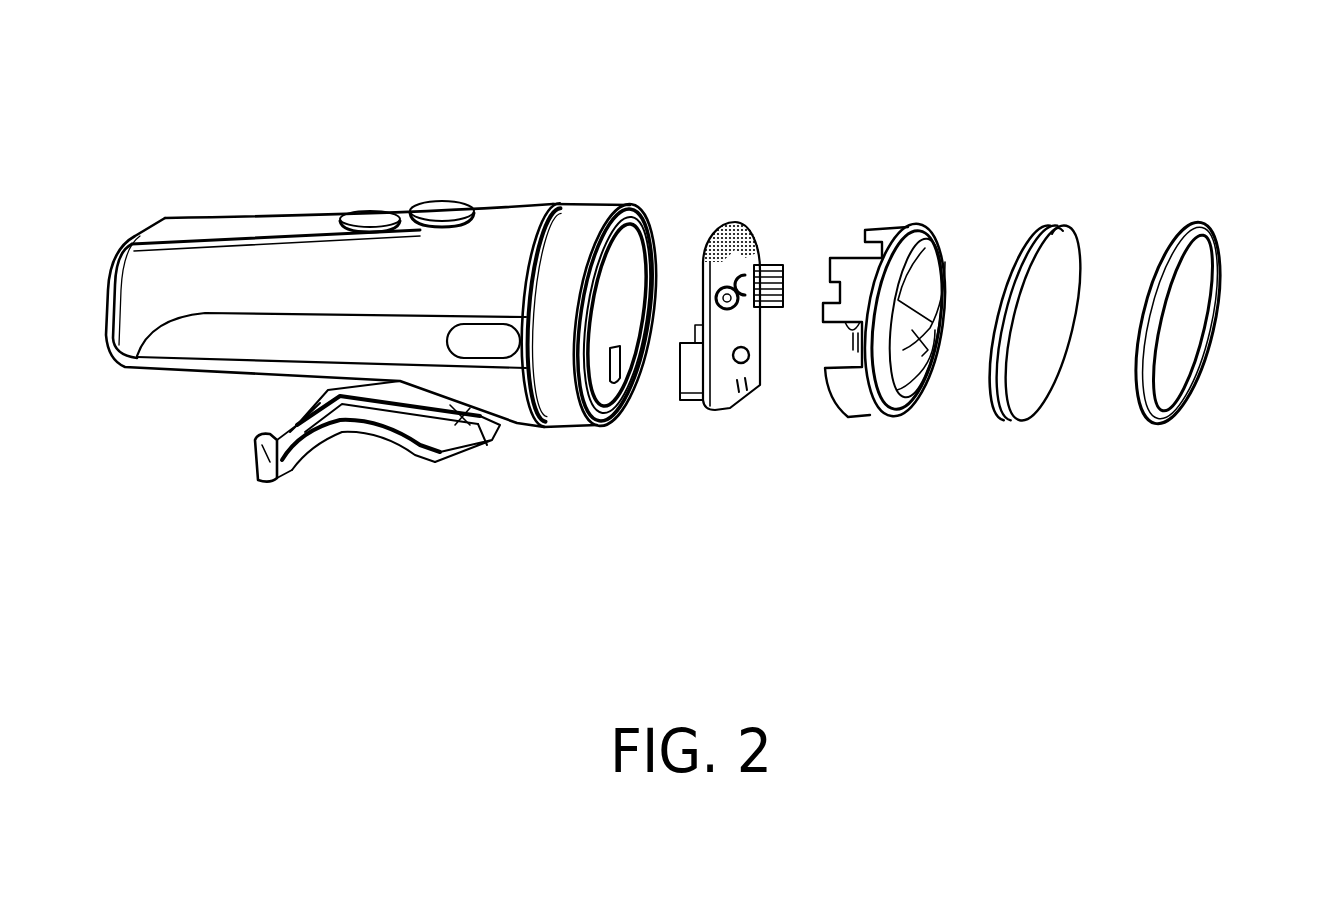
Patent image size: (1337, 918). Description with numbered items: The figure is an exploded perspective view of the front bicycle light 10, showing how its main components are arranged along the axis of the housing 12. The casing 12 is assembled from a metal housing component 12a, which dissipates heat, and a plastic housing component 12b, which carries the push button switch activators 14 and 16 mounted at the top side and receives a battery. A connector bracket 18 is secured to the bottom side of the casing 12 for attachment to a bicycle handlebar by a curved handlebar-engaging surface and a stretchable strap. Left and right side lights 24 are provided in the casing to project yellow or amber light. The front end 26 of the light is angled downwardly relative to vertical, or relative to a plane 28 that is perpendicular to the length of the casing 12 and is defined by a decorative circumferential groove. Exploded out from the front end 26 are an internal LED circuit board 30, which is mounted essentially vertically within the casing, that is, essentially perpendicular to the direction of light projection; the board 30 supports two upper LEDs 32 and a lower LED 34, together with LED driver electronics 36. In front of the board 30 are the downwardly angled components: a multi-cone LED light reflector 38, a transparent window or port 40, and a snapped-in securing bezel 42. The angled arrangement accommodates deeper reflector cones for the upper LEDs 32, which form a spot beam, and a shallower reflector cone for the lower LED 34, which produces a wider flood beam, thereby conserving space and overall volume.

The front bicycle light 10 is at (671, 63).
The housing 12 is at (285, 203).
The metal housing component 12a is at (491, 279).
The plastic housing component 12b is at (185, 227).
The push button type switch 14 is at (448, 203).
The push button type switch 16 is at (372, 207).
The connector bracket 18 is at (307, 405).
The side light 24 is at (492, 343).
The front end 26 is at (660, 217).
The plane defined by circumferential groove 28 is at (566, 205).
The LED circuit board 30 is at (757, 252).
The upper LEDs 32 is at (713, 287).
The lower LED 34 is at (750, 362).
The LED driver electronics 36 is at (693, 400).
The multi-cone LED light reflector 38 is at (928, 228).
The transparent window 40 is at (1068, 228).
The securing bezel 42 is at (1215, 232).